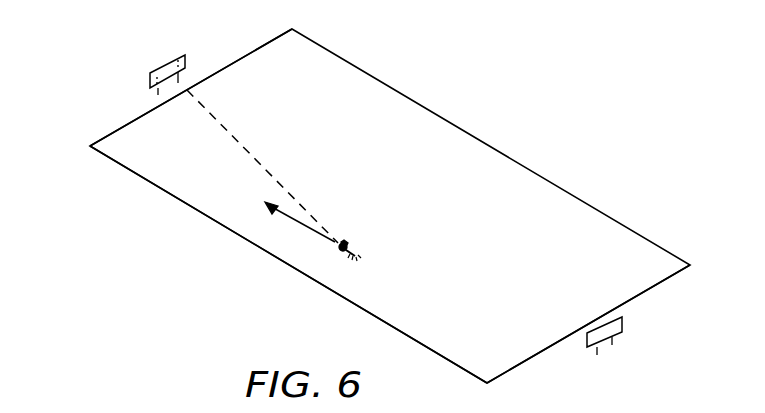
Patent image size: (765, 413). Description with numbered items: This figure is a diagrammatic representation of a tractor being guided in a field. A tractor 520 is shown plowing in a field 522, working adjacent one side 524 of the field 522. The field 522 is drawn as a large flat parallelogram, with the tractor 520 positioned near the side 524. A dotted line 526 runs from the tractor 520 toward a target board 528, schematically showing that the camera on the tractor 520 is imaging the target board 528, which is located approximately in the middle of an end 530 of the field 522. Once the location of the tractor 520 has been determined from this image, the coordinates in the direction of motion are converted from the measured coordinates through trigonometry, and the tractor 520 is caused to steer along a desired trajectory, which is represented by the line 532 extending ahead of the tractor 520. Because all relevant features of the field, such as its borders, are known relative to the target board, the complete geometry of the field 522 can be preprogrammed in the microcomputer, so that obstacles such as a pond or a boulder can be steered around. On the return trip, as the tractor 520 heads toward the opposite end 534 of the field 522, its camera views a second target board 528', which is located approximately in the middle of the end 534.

The tractor 520 is at (350, 245).
The field 522 is at (373, 92).
The side of field 524 is at (267, 253).
The dotted line 526 is at (240, 143).
The target board 528 is at (139, 50).
The target board 528' is at (652, 335).
The end of field 530 is at (113, 133).
The line representing desired trajectory 532 is at (292, 220).
The opposite end of field 534 is at (527, 358).